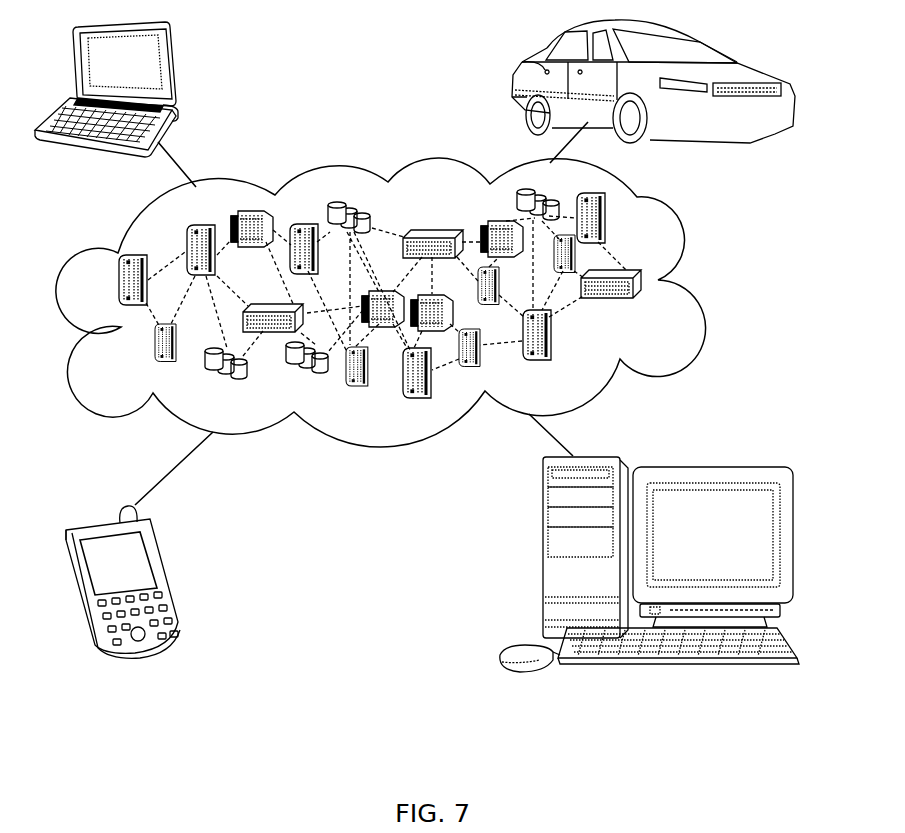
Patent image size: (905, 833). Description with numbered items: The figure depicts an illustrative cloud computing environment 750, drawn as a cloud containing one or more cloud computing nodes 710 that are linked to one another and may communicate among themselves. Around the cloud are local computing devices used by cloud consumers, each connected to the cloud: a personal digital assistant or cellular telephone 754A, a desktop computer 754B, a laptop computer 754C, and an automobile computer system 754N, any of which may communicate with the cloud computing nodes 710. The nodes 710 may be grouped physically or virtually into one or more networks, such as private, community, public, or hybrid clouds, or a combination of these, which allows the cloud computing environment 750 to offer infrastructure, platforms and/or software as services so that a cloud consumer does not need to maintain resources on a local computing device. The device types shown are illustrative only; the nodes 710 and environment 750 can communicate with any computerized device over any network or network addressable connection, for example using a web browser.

The cloud computing nodes 710 is at (666, 299).
The cloud computing environment 750 is at (683, 245).
The personal digital assistant or cellular telephone 754A is at (165, 575).
The desktop computer 754B is at (542, 555).
The laptop computer 754C is at (173, 68).
The automobile computer system 754N is at (522, 77).